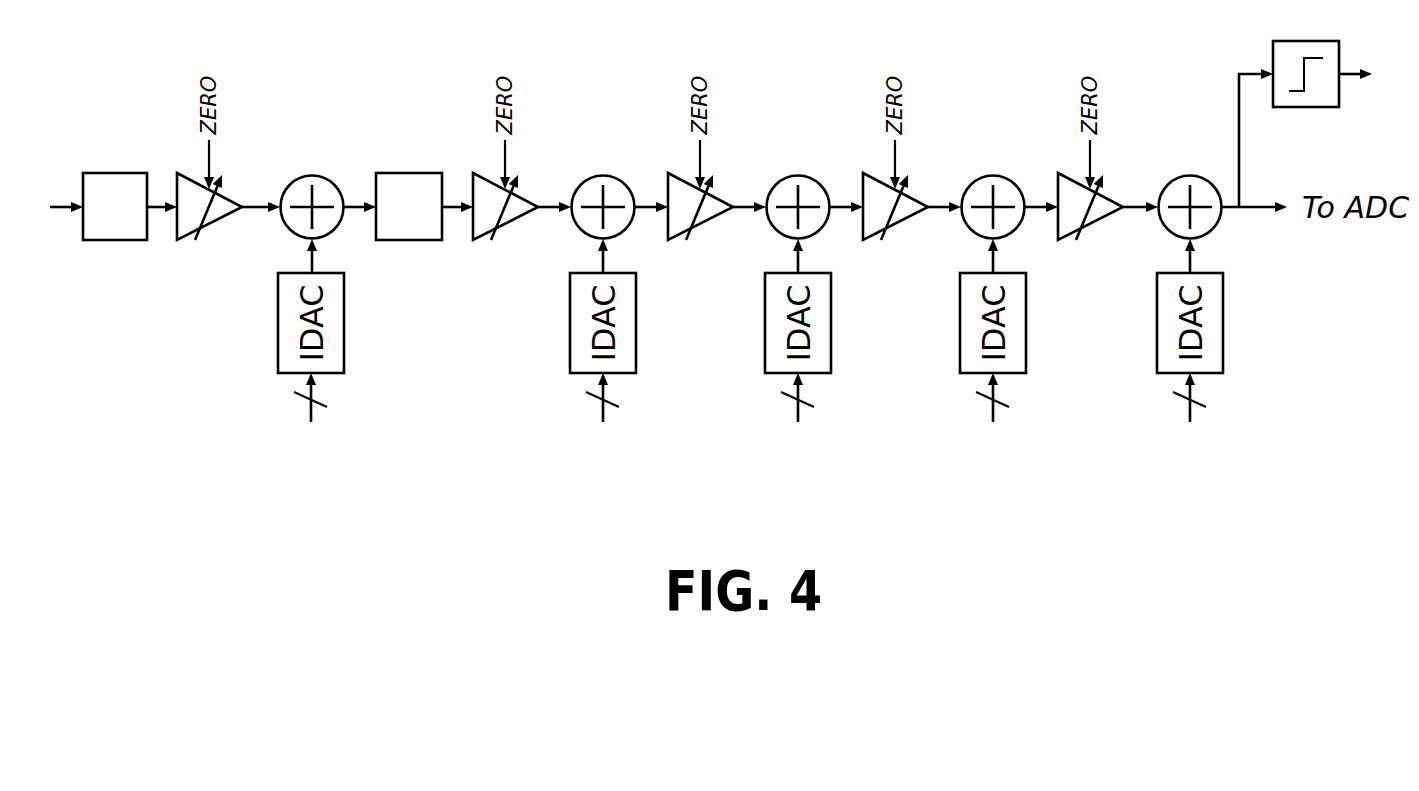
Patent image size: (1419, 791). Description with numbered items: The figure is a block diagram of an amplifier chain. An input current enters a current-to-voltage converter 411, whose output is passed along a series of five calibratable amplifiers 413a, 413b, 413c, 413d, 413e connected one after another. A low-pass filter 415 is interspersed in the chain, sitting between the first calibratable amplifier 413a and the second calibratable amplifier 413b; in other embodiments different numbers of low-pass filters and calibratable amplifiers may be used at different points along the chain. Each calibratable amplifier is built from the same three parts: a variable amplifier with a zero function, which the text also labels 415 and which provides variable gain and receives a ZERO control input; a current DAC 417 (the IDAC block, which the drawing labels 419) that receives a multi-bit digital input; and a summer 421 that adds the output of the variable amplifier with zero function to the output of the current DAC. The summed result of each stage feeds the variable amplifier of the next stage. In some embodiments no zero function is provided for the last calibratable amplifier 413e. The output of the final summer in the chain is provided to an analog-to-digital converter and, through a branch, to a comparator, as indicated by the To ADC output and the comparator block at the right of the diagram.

The current-to-voltage converter 411 is at (115, 173).
The calibratable amplifier 413a is at (324, 215).
The calibratable amplifier 413b is at (590, 108).
The calibratable amplifier 413c is at (770, 125).
The calibratable amplifier 413d is at (963, 125).
The calibratable amplifier 413e is at (1146, 110).
The low-pass filter 415 is at (412, 172).
The current DAC 417 is at (222, 219).
The current DAC (IDAC) 419 is at (344, 322).
The summer 421 is at (320, 176).